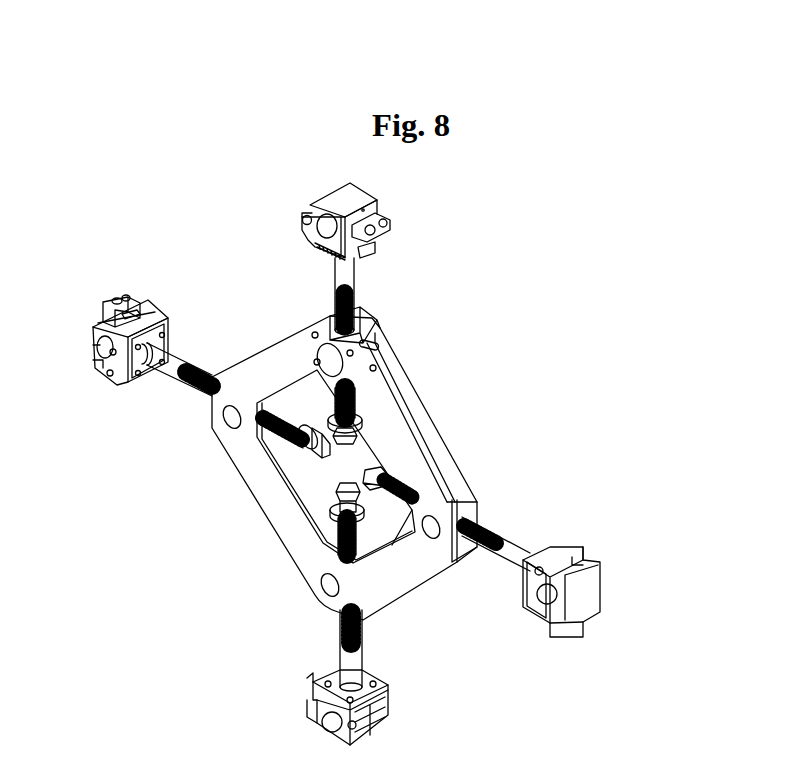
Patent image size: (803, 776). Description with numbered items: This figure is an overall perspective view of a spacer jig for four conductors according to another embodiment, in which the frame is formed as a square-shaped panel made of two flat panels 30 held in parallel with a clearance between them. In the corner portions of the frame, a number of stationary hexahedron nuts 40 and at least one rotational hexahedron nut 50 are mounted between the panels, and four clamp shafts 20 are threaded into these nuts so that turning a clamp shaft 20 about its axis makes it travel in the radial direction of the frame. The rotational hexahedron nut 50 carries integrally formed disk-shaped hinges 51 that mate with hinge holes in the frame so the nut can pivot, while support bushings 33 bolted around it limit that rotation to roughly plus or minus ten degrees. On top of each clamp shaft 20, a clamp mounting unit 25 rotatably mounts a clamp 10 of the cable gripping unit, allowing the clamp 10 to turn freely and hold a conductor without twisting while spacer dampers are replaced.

The clamp 10 is at (320, 237).
The clamp shaft 20 is at (347, 277).
The clamp mounting unit 25 is at (320, 257).
The flat panels 30 is at (432, 416).
The support bushing 33 is at (373, 345).
The stationary hexahedron nut 40 is at (478, 495).
The rotational hexahedron nut 50 is at (366, 326).
The disk-shaped hinge 51 is at (326, 360).